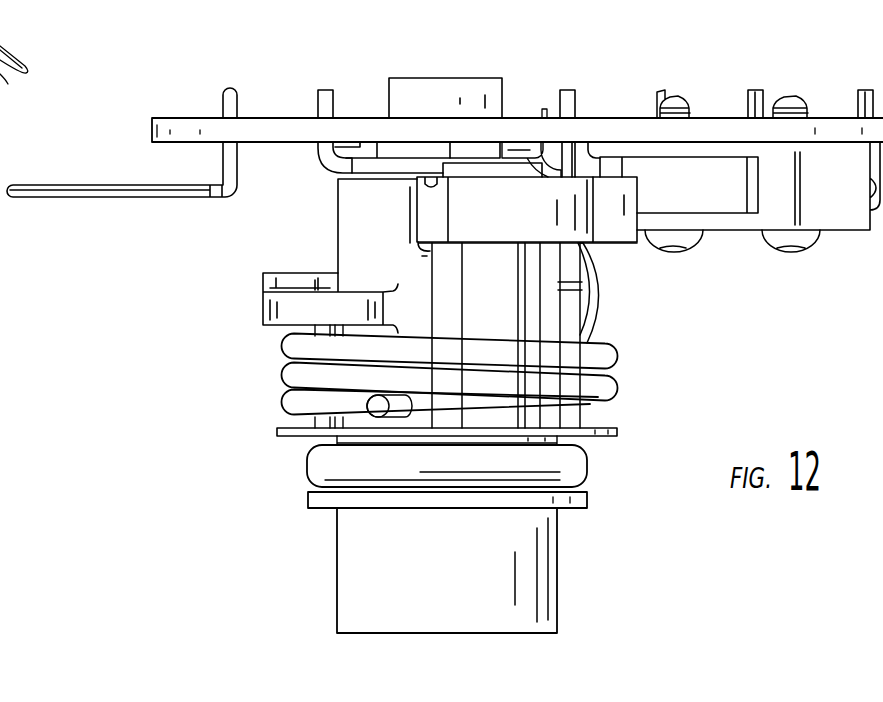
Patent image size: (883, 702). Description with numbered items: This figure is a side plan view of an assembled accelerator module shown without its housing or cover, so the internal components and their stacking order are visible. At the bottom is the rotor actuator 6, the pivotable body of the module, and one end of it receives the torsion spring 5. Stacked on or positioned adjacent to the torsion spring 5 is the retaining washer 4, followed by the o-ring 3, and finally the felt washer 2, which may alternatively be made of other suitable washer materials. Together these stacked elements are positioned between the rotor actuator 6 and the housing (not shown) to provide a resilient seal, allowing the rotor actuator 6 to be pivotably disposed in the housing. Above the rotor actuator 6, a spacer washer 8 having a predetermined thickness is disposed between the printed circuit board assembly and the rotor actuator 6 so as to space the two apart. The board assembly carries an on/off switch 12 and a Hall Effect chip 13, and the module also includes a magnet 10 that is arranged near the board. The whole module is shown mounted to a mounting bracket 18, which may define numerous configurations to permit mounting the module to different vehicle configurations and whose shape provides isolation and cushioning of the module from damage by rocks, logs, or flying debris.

The felt washer 2 is at (587, 500).
The o-ring 3 is at (588, 465).
The retaining washer 4 is at (617, 432).
The torsion spring 5 is at (618, 385).
The rotor actuator 6 is at (545, 582).
The spacer washer 8 is at (352, 173).
The magnet 10 is at (726, 205).
The on/off switch 12 is at (847, 218).
The Hall Effect chip 13 is at (487, 148).
The mounting bracket 18 is at (611, 132).